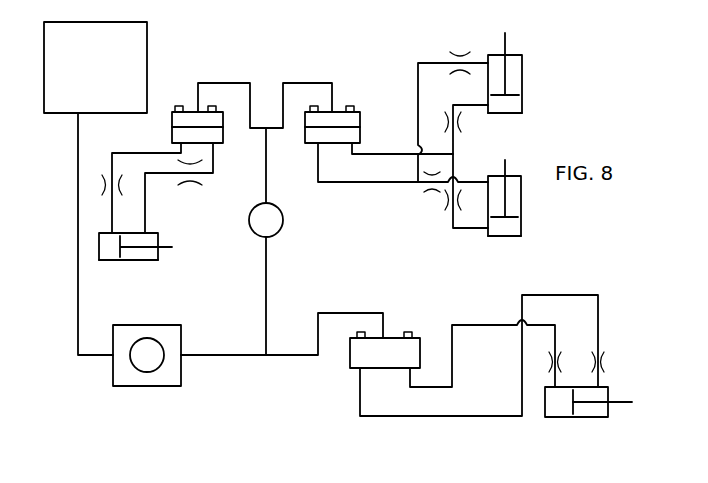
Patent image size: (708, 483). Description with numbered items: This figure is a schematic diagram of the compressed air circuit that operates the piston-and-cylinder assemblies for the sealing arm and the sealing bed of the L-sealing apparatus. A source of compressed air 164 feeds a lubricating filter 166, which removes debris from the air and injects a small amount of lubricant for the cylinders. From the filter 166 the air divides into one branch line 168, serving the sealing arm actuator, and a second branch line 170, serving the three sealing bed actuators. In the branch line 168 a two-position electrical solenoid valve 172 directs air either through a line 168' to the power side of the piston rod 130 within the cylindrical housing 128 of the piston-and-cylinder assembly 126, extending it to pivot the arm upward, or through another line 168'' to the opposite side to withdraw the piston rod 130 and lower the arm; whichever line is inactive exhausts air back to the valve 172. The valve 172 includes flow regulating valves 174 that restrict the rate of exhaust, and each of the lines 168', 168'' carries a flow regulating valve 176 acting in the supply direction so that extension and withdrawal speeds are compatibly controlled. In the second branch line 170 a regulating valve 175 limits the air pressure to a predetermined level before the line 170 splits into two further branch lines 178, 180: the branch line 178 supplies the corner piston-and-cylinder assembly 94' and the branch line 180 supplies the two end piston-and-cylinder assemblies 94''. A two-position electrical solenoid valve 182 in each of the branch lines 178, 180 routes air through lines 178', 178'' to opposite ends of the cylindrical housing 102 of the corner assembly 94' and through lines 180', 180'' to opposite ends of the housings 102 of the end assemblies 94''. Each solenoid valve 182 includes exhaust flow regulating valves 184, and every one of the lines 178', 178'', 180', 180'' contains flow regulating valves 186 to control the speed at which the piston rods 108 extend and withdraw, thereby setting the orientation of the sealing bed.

The source of compressed air 164 is at (112, 22).
The lubricating filter 166 is at (181, 343).
The branch line 168 is at (389, 373).
The line 168' is at (482, 336).
The line 168'' is at (479, 377).
The branch line 170 is at (268, 276).
The electrical solenoid valve 172 is at (376, 362).
The flow regulating valves 174 is at (408, 331).
The regulating valve 175 is at (283, 217).
The flow regulating valve 176 is at (563, 360).
The branch line 178 is at (265, 83).
The line 178' is at (143, 175).
The line 178'' is at (179, 188).
The branch line 180 is at (301, 59).
The line 180' is at (420, 122).
The line 180'' is at (403, 166).
The two-position electrical solenoid valve 182 is at (172, 118).
The exhaust flow regulating valves 184 is at (212, 106).
The flow regulating valves 186 is at (104, 187).
The corner piston-and-cylinder assembly 94' is at (139, 264).
The end piston-and-cylinder assemblies 94'' is at (531, 150).
The cylindrical housing 102 is at (128, 278).
The piston rod 108 is at (172, 233).
The piston-and-cylinder assembly 126 is at (557, 419).
The cylindrical housing 128 is at (593, 418).
The piston rod 130 is at (617, 402).